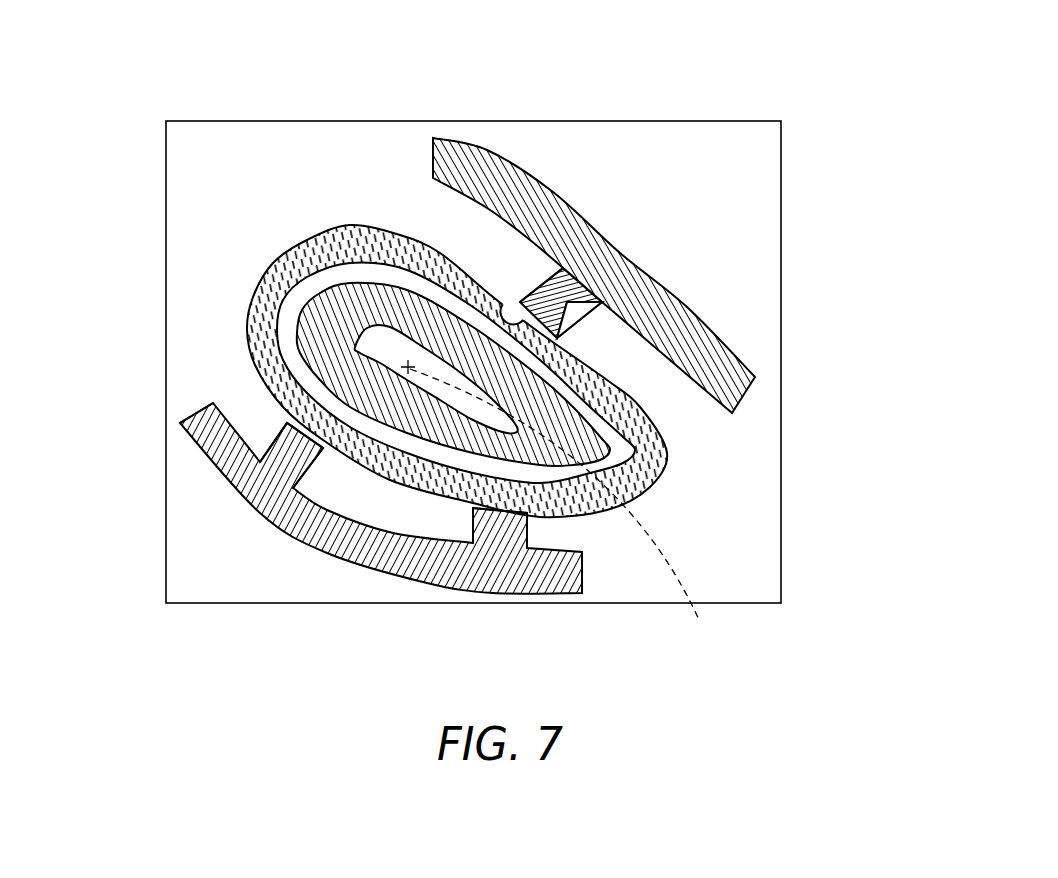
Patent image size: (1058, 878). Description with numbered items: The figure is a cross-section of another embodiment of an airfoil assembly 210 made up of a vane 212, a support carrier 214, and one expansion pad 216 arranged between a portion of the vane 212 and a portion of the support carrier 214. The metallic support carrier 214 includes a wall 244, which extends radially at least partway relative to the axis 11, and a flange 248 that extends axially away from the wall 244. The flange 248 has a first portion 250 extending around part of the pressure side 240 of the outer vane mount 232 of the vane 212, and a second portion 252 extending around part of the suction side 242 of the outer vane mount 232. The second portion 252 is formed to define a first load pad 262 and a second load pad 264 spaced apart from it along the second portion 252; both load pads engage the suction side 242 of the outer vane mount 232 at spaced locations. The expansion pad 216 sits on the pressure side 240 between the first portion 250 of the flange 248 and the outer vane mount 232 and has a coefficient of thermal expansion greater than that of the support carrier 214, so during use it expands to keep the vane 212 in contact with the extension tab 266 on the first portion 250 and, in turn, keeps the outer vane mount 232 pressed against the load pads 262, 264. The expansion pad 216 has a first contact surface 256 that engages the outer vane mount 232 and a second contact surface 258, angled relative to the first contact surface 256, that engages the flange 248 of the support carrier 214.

The airfoil assembly 210 is at (850, 168).
The support carrier 214 is at (98, 172).
The wall 244 is at (246, 175).
The vane 212 is at (325, 170).
The outer vane mount 232 is at (352, 225).
The pressure side 240 is at (613, 383).
The suction side 242 is at (390, 483).
The first contact surface 256 is at (501, 305).
The axis 11 is at (560, 505).
The first portion 250 is at (625, 255).
The second contact surface 258 is at (566, 271).
The extension tab 266 is at (598, 318).
The expansion pad 216 is at (535, 284).
The second portion 252 is at (232, 498).
The flange 248 is at (200, 385).
The first load pad 262 is at (313, 483).
The second load pad 264 is at (470, 523).